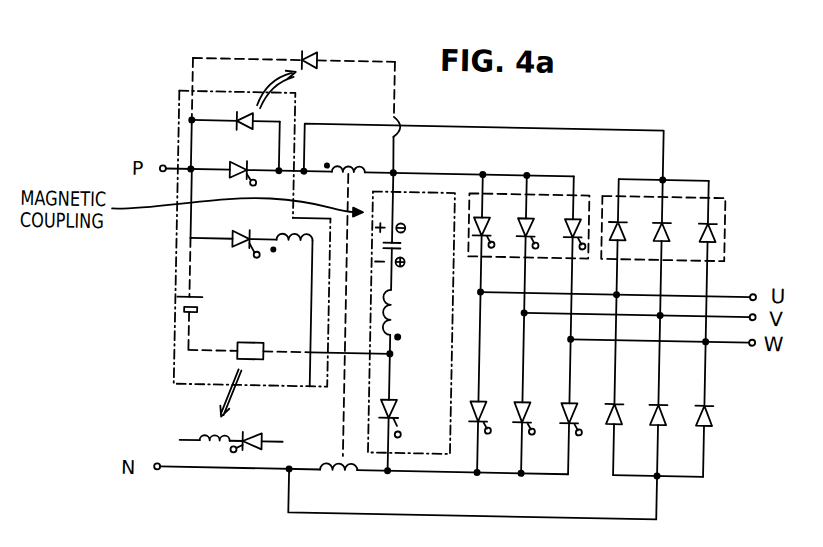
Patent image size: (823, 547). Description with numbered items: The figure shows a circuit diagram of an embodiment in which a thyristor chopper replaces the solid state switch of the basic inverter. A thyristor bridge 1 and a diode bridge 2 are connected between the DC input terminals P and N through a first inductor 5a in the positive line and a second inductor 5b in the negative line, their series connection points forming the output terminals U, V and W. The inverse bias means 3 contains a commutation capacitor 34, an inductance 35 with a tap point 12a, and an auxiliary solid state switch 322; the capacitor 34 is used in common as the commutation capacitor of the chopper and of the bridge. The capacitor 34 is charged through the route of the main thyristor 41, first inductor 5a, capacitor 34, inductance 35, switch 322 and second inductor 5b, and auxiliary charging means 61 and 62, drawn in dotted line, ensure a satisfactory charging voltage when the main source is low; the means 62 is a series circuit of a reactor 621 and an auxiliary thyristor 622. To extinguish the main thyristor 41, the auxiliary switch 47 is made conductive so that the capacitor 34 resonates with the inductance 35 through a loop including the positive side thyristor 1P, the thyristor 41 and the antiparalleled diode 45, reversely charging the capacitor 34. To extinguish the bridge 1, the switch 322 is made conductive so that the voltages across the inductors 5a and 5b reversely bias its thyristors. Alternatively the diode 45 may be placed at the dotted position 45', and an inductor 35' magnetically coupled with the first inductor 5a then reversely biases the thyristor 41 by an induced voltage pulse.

The alternative position of antiparalleled diode 45' is at (296, 94).
The antiparalleled diode 45 is at (232, 133).
The main thyristor 41 is at (235, 187).
The auxiliary switch 47 is at (236, 233).
The inductor 35' is at (291, 261).
The auxiliary charging means 61 is at (204, 300).
The auxiliary charging means 62 is at (250, 346).
The reactor 621 is at (216, 448).
The auxiliary thyristor 622 is at (254, 455).
The first inductor 5a is at (348, 172).
The second inductor 5b is at (338, 483).
The inverse bias means 3 is at (440, 191).
The thyristor bridge 1 is at (513, 161).
The diode bridge 2 is at (645, 158).
The positive side thyristor 1P is at (484, 153).
The commutation capacitor 34 is at (406, 240).
The inductance 35 is at (408, 313).
The reactor tap terminal 12a is at (419, 327).
The auxiliary solid state switch 322 is at (401, 409).